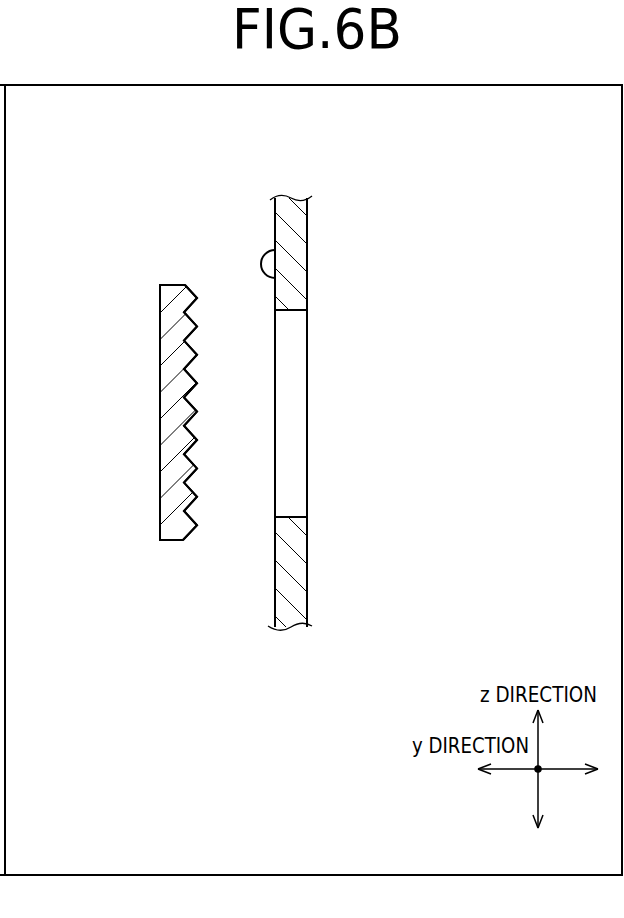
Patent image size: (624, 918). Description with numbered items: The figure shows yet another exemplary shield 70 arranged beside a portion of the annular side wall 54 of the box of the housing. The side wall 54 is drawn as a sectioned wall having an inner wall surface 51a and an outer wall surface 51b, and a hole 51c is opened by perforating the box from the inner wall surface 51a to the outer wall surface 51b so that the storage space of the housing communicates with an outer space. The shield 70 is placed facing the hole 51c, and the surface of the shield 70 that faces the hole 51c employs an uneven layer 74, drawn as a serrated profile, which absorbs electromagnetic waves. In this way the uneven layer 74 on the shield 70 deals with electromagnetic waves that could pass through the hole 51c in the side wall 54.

The shield 70 is at (150, 276).
The uneven layer 74 is at (191, 287).
The side wall 54 is at (308, 207).
The inner wall surface 51a is at (273, 279).
The outer wall surface 51b is at (308, 233).
The hole 51c is at (288, 517).